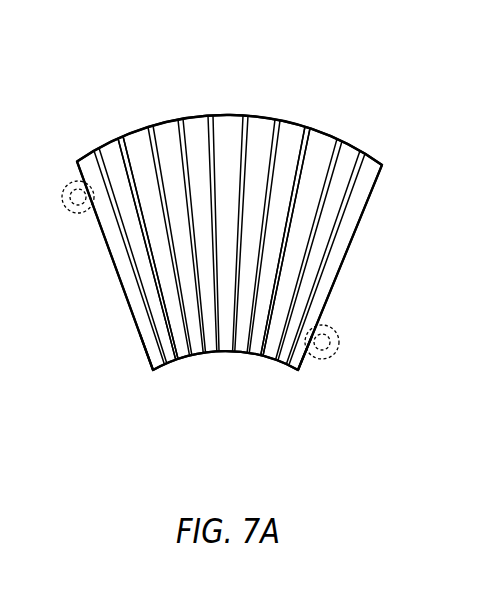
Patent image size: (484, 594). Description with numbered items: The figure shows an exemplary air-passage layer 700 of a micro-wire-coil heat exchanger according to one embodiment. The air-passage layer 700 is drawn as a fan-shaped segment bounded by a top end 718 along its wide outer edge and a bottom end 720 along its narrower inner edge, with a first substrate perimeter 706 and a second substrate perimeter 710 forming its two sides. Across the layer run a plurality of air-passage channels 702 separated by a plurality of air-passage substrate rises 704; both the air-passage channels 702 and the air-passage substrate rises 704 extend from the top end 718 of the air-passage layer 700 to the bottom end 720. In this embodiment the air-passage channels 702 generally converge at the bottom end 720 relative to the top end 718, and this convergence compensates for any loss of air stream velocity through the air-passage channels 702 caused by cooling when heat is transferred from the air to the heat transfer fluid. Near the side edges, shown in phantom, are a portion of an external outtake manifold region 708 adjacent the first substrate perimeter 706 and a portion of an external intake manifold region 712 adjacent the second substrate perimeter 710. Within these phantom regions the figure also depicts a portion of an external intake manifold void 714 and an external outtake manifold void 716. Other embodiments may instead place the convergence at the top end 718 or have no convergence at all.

The air-passage layer 700 is at (270, 381).
The air-passage channels 702 is at (225, 115).
The air-passage substrate rises 704 is at (319, 137).
The first substrate perimeter 706 is at (156, 366).
The external outtake manifold region 708 is at (78, 220).
The second substrate perimeter 710 is at (345, 230).
The external intake manifold region 712 is at (334, 351).
The external intake manifold void 714 is at (324, 336).
The external outtake manifold void 716 is at (78, 188).
The top end 718 is at (102, 94).
The bottom end 720 is at (250, 436).